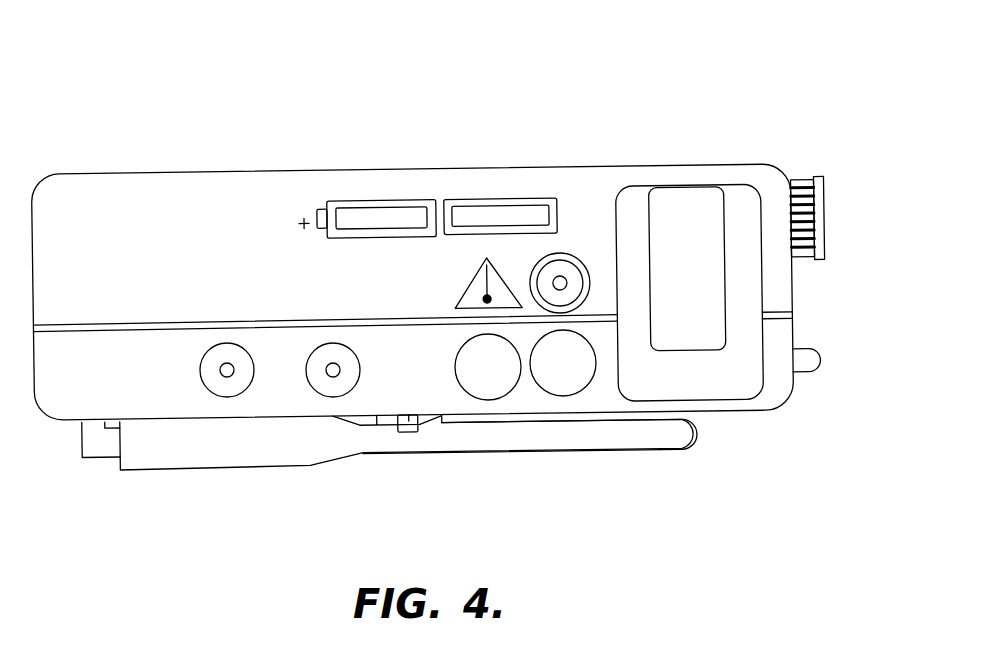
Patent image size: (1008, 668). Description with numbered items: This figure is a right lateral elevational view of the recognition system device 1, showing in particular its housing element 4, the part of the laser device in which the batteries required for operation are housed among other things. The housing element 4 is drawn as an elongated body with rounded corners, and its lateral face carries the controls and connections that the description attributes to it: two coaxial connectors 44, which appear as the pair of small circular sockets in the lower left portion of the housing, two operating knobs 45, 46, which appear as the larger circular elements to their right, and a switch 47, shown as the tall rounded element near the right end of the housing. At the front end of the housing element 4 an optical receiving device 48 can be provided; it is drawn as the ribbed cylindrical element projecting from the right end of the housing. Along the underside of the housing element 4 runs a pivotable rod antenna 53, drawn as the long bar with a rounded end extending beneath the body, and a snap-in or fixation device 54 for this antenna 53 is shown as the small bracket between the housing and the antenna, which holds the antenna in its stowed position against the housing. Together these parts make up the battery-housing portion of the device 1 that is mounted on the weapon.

The recognition system device 1 is at (183, 93).
The housing element 4 is at (263, 195).
The coaxial connectors 44 is at (317, 378).
The operating knob 45 is at (490, 385).
The operating knob 46 is at (565, 385).
The switch 47 is at (713, 323).
The optical receiving device 48 is at (800, 190).
The pivotable rod antenna 53 is at (653, 440).
The snap-in or fixation device 54 is at (410, 423).